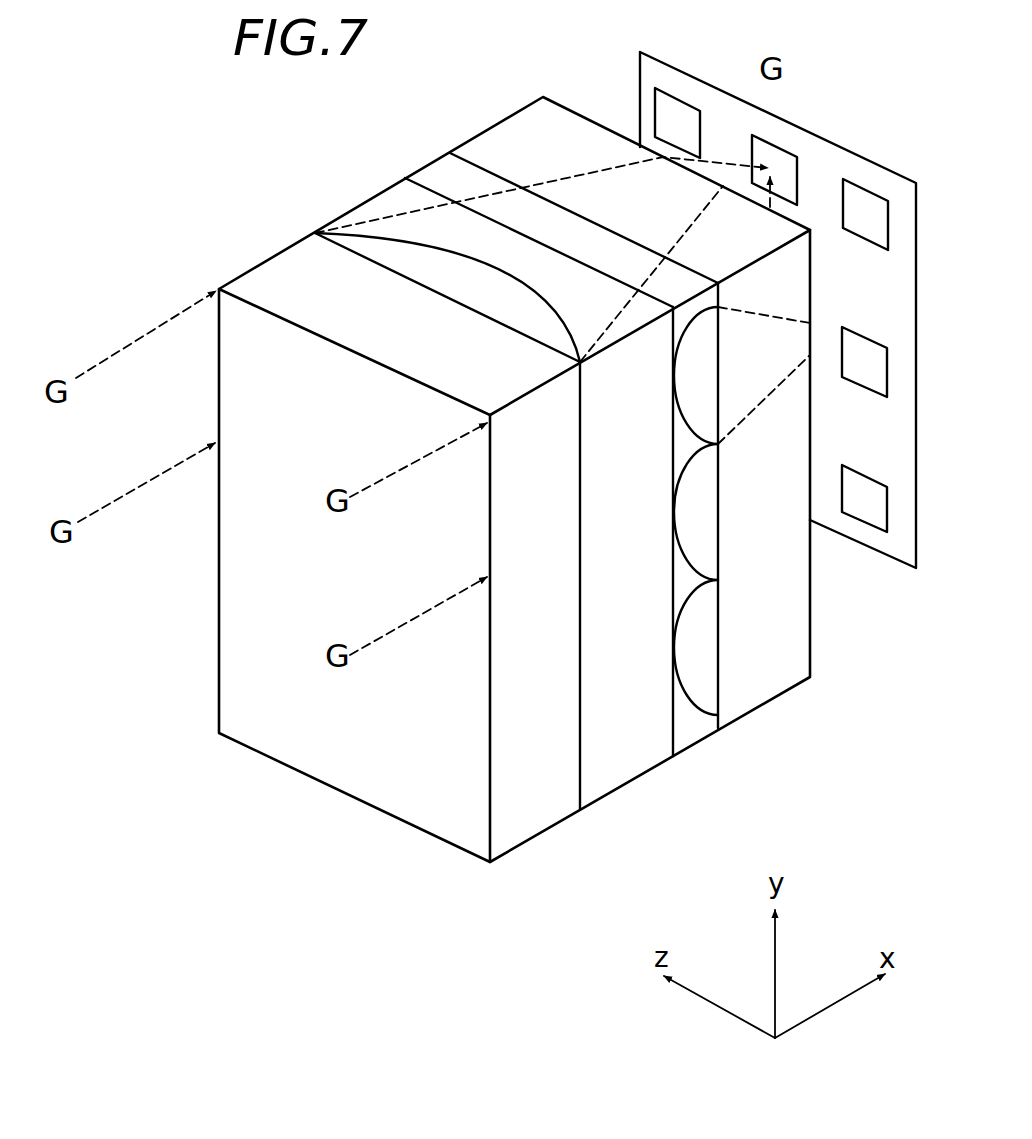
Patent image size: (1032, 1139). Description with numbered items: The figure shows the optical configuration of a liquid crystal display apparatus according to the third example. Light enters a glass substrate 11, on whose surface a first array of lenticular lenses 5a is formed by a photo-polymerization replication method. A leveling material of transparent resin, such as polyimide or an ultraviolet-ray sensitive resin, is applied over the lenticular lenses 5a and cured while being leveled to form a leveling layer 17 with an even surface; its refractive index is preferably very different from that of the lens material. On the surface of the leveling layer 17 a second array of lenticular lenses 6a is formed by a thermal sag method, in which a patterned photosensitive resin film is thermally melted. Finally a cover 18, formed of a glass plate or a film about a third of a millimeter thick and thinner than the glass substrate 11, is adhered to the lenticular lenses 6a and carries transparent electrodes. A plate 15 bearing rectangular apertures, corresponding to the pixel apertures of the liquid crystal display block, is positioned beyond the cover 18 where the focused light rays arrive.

The glass substrate 11 is at (197, 622).
The lenticular lenses 5a is at (387, 253).
The lenticular lenses 6a is at (722, 650).
The aperture plate 15 is at (638, 69).
The leveling layer 17 is at (650, 747).
The cover 18 is at (777, 605).